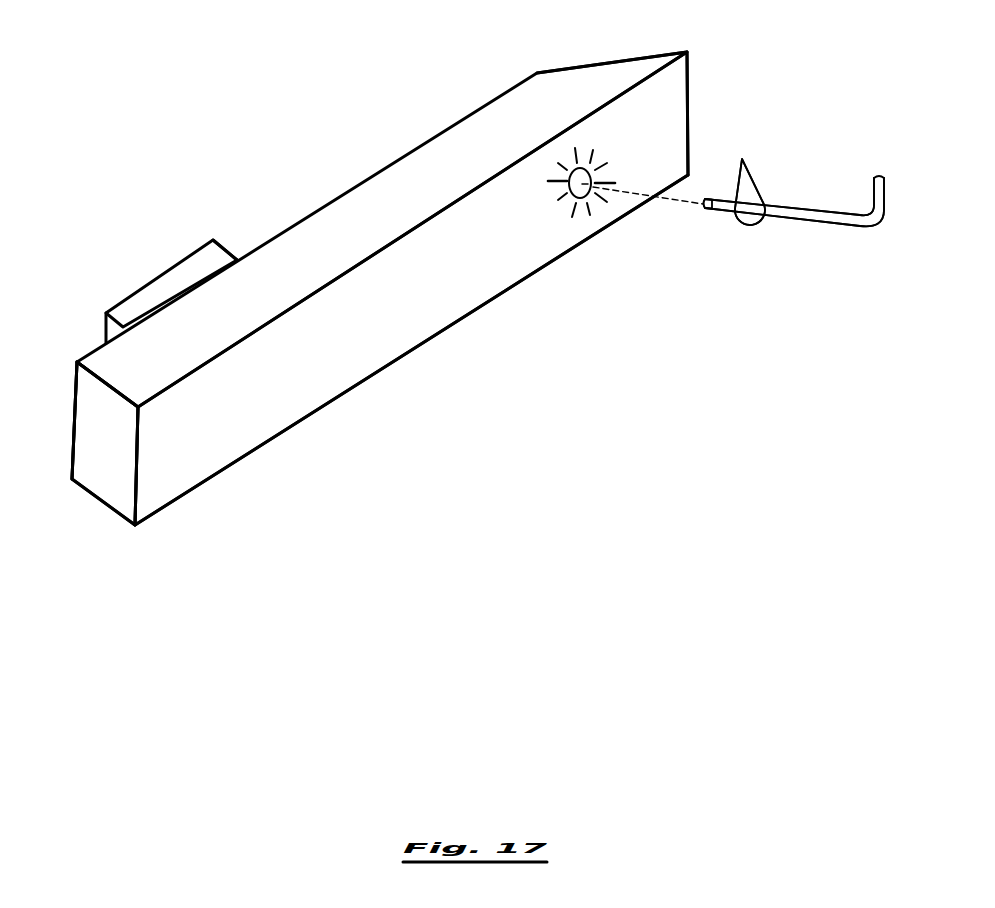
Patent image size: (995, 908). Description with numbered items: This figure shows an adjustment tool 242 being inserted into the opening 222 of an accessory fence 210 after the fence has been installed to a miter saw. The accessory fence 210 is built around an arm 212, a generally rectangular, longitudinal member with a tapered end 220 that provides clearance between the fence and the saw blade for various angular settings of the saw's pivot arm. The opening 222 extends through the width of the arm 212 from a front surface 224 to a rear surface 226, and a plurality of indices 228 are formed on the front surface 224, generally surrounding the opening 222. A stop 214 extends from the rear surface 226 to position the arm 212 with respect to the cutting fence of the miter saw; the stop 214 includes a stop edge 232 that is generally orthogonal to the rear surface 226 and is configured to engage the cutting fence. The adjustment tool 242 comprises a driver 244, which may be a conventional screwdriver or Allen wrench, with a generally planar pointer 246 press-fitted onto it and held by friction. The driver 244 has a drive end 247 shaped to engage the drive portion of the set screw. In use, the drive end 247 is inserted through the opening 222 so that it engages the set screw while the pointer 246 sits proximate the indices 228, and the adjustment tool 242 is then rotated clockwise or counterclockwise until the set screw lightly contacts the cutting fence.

The accessory fence 210 is at (62, 422).
The arm 212 is at (195, 464).
The stop 214 is at (157, 278).
The tapered end 220 is at (617, 61).
The opening 222 is at (568, 188).
The front surface 224 is at (388, 353).
The rear surface 226 is at (74, 383).
The indices 228 is at (603, 154).
The stop edge 232 is at (220, 240).
The adjustment tool 242 is at (835, 204).
The driver 244 is at (787, 223).
The pointer 246 is at (752, 176).
The drive end 247 is at (707, 212).